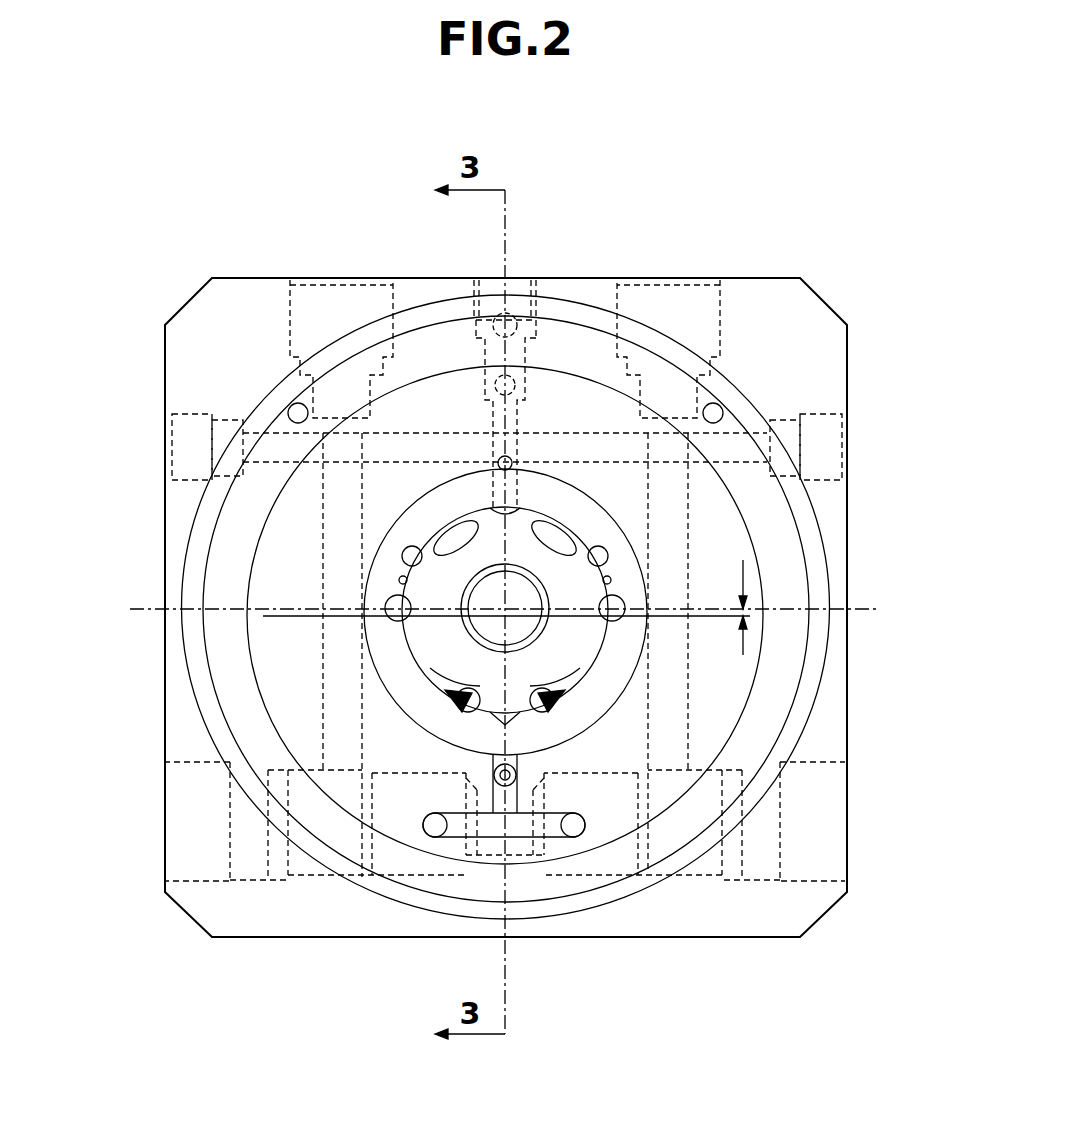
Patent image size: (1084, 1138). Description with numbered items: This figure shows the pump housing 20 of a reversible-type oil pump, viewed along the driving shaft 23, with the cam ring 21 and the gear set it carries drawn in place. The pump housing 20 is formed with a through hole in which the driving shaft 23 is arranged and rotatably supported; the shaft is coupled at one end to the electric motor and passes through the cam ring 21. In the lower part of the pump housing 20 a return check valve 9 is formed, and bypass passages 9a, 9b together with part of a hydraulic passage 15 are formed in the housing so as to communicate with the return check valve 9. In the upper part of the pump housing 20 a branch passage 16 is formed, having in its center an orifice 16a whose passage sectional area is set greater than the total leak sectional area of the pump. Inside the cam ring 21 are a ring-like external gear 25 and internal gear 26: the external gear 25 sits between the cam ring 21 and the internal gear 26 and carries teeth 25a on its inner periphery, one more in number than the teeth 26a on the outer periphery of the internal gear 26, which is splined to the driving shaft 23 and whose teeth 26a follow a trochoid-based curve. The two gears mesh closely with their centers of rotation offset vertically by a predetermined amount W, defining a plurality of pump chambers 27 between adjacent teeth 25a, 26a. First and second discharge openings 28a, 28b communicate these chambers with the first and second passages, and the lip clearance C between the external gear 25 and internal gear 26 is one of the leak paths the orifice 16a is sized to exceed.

The pump housing 20 is at (763, 277).
The cam ring 21 is at (817, 517).
The return check valve 9 is at (705, 880).
The bypass passage 9a is at (323, 538).
The bypass passage 9b is at (690, 524).
The branch passage 16 is at (820, 412).
The orifice 16a is at (499, 450).
The hydraulic passage 15 is at (550, 838).
The lip clearance C is at (505, 726).
The driving shaft 23 is at (541, 597).
The external gear 25 is at (620, 655).
The teeth 25a is at (560, 702).
The internal gear 26 is at (456, 700).
The teeth 26a is at (460, 680).
The pump chamber 27 is at (423, 657).
The first discharge opening 28a is at (388, 620).
The second discharge opening 28b is at (624, 611).
The predetermined amount W is at (729, 607).